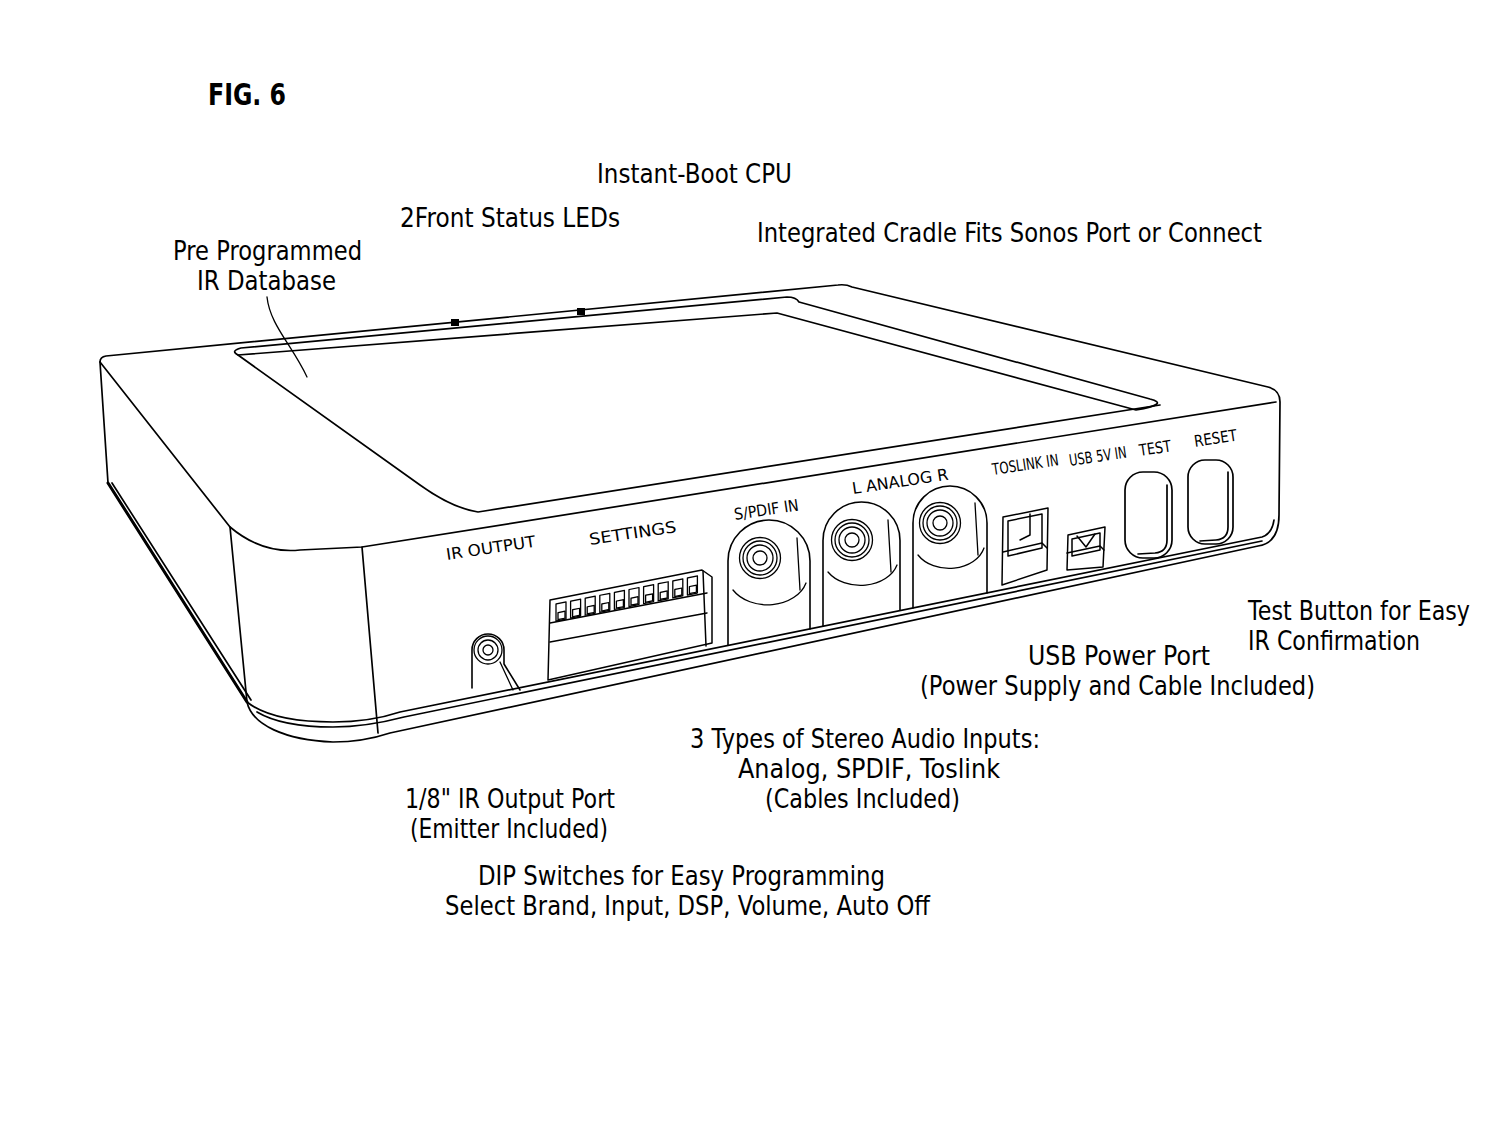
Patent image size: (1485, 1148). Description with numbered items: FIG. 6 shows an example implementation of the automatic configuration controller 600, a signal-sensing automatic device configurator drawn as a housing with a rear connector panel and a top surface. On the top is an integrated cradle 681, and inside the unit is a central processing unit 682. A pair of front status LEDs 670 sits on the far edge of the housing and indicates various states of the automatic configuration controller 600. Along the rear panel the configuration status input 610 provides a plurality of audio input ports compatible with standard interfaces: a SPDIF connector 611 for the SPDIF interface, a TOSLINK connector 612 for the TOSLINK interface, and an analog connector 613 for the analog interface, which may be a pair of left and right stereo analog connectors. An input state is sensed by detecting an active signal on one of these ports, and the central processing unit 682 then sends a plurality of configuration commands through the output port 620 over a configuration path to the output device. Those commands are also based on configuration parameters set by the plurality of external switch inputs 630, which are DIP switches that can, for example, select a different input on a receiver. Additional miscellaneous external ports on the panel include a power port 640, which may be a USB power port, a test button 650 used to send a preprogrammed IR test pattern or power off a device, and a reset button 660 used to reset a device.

The automatic configuration controller 600 is at (1274, 131).
The configuration status input 610 is at (967, 582).
The SPDIF connector 611 is at (763, 494).
The TOSLINK connector 612 is at (961, 463).
The analog connector 613 is at (855, 473).
The output port 620 is at (503, 660).
The plurality of external switch inputs 630 is at (620, 647).
The power port 640 is at (1093, 553).
The test button 650 is at (1137, 530).
The reset button 660 is at (1240, 434).
The pair of front status LEDs 670 is at (580, 311).
The integrated cradle 681 is at (958, 372).
The central processing unit 682 is at (638, 378).